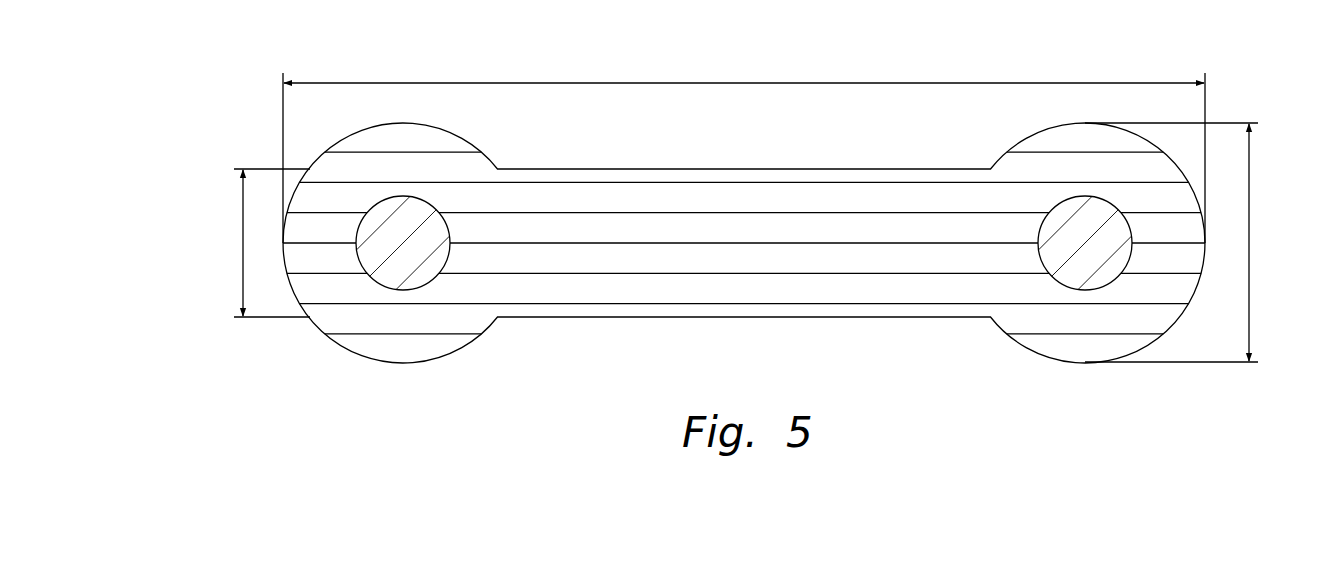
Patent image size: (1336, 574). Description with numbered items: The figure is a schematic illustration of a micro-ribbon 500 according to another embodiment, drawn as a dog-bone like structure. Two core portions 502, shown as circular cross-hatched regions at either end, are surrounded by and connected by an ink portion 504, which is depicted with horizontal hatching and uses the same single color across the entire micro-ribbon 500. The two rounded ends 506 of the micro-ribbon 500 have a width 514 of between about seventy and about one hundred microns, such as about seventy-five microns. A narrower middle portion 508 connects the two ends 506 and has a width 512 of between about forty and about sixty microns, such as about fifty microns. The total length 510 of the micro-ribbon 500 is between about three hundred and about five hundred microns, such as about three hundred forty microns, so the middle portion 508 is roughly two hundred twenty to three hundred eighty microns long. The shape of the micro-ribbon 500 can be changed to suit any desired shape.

The micro-ribbon 500 is at (238, 98).
The core portion 502 is at (407, 265).
The ink portion 504 is at (423, 138).
The end 506 is at (421, 365).
The middle portion 508 is at (745, 320).
The total length 510 is at (748, 83).
The width of middle portion 512 is at (243, 245).
The width of ends 514 is at (1249, 243).